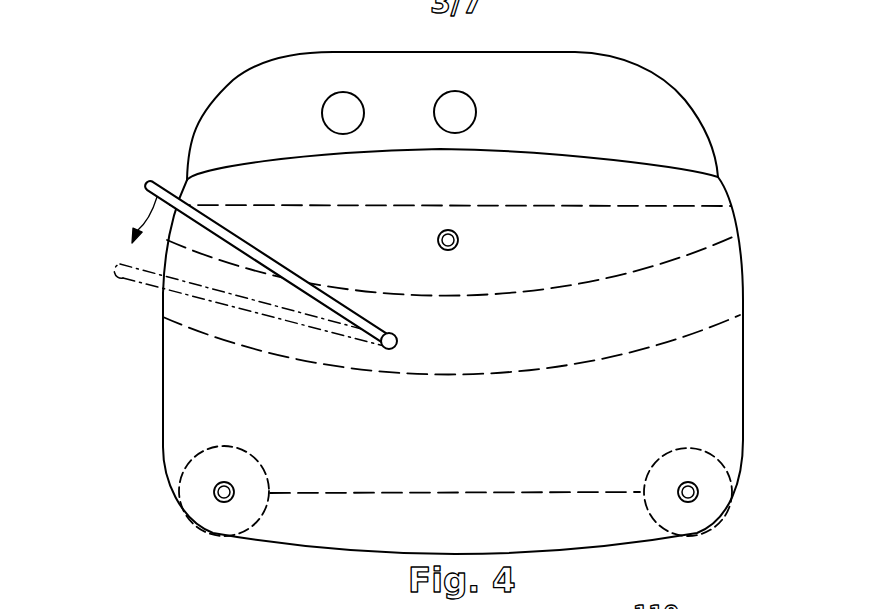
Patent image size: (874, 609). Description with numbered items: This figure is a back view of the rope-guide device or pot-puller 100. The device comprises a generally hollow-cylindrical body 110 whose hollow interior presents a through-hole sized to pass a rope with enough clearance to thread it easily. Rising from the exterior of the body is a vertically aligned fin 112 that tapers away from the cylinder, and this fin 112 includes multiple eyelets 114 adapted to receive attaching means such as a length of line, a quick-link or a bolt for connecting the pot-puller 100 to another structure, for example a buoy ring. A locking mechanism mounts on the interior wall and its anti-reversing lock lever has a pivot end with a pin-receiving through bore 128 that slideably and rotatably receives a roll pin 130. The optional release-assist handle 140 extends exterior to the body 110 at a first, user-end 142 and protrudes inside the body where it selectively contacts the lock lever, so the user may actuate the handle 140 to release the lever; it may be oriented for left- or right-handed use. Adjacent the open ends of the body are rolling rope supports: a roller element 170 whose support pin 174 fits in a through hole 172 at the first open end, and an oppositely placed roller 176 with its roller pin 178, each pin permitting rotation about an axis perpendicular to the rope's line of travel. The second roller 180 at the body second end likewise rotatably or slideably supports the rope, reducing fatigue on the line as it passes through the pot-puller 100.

The pot-puller 100 is at (713, 67).
The hollow-cylindrical body 110 is at (580, 50).
The fin 112 is at (218, 93).
The eyelets 114 is at (357, 97).
The pin-receiving through bore 128 is at (455, 234).
The roll pin 130 is at (455, 246).
The release-assist handle 140 is at (290, 263).
The user-end 142 is at (147, 177).
The roller element 170 is at (201, 455).
The through hole 172 is at (214, 489).
The support pin 174 is at (215, 496).
The oppositely placed roller 176 is at (707, 455).
The roller pin 178 is at (695, 490).
The second roller 180 is at (696, 497).